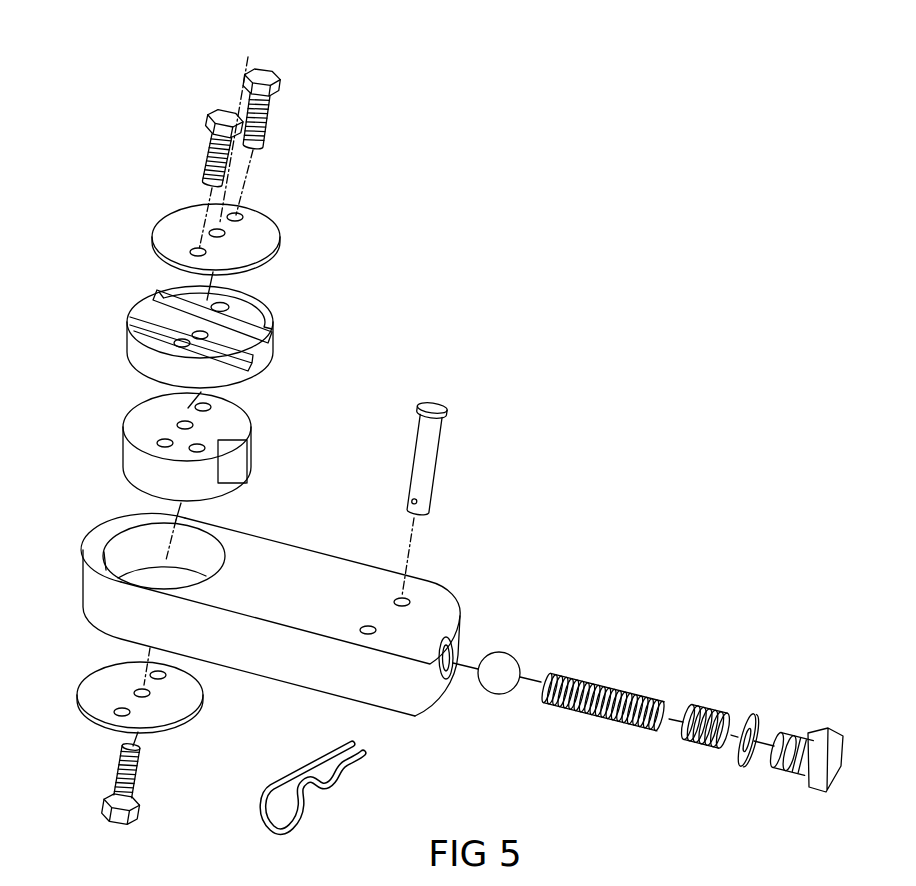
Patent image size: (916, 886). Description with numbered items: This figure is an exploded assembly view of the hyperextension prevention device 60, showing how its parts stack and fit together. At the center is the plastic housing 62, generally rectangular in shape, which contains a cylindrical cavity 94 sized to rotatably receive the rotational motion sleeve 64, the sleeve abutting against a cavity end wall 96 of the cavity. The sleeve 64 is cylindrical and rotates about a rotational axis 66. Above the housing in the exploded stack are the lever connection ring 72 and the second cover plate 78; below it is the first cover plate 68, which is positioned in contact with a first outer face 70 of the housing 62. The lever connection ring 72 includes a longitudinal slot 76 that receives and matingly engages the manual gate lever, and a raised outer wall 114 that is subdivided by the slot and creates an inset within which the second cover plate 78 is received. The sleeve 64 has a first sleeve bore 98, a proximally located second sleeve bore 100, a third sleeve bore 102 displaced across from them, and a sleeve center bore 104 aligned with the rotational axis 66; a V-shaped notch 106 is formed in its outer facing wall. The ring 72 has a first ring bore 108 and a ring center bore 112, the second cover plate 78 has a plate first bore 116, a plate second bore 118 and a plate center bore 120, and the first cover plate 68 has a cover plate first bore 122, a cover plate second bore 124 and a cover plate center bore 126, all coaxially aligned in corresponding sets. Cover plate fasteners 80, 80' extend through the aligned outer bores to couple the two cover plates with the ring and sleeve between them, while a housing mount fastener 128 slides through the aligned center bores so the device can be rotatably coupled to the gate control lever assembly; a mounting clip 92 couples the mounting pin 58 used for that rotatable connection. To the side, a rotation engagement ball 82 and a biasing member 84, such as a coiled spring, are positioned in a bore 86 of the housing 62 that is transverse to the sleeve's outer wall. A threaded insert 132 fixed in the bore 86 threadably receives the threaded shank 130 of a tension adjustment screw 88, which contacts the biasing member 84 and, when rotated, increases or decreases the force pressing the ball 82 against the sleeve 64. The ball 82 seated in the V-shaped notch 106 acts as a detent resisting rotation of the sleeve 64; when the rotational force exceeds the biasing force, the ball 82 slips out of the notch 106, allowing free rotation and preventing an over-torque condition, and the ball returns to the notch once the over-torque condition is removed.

The mounting pin 58 is at (429, 466).
The hyperextension prevention device 60 is at (542, 477).
The housing 62 is at (291, 632).
The rotational motion sleeve 64 is at (180, 439).
The rotational axis 66 is at (247, 60).
The first cover plate 68 is at (142, 711).
The first outer face 70 is at (278, 682).
The lever connection ring 72 is at (204, 335).
The longitudinal slot 76 is at (262, 352).
The second cover plate 78 is at (216, 231).
The cover plate fastener 80 is at (271, 141).
The cover plate fastener 80' is at (197, 179).
The rotation engagement ball 82 is at (507, 660).
The biasing member 84 is at (609, 684).
The bore 86 is at (446, 668).
The tension adjustment screw 88 is at (829, 744).
The mounting clip 92 is at (304, 816).
The cylindrical cavity 94 is at (192, 543).
The cavity end wall 96 is at (183, 575).
The first sleeve bore 98 is at (163, 440).
The second sleeve bore 100 is at (198, 446).
The third sleeve bore 102 is at (206, 405).
The sleeve center bore 104 is at (184, 422).
The V-shaped notch 106 is at (232, 452).
The first ring bore 108 is at (178, 342).
The ring center bore 112 is at (196, 333).
The raised outer wall 114 is at (270, 328).
The plate first bore 116 is at (197, 249).
The plate second bore 118 is at (238, 216).
The plate center bore 120 is at (221, 235).
The cover plate first bore 122 is at (120, 710).
The cover plate second bore 124 is at (163, 674).
The cover plate center bore 126 is at (153, 691).
The housing mount fastener 128 is at (136, 786).
The threaded shank 130 is at (797, 733).
The threaded insert 132 is at (710, 712).